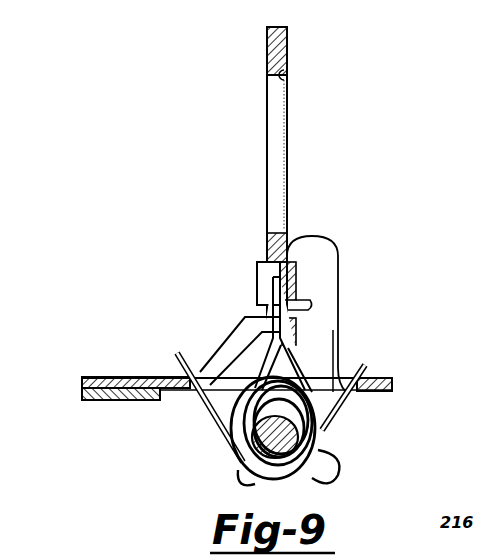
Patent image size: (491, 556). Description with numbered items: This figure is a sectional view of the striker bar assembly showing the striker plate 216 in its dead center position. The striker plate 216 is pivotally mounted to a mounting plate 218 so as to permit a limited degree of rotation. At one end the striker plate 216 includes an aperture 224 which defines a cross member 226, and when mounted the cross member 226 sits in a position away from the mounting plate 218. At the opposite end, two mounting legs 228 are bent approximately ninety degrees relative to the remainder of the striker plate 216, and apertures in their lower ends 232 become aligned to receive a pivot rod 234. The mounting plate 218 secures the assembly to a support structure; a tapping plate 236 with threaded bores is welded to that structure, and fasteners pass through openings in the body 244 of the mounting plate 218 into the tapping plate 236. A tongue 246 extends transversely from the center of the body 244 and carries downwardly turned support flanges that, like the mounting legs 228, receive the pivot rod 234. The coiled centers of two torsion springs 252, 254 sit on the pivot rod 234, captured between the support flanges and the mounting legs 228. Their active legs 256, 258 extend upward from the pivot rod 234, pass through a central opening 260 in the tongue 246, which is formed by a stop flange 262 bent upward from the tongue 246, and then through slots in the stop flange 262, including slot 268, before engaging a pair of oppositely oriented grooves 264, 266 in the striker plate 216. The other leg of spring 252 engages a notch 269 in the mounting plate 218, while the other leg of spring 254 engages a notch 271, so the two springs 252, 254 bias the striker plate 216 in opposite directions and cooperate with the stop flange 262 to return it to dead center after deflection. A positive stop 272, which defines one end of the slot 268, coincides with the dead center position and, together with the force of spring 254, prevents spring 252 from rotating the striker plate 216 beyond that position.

The striker plate 216 is at (283, 146).
The mounting plate 218 is at (80, 381).
The aperture 224 is at (286, 80).
The cross member 226 is at (283, 55).
The mounting legs 228 is at (318, 255).
The lower ends 232 is at (328, 462).
The pivot rod 234 is at (258, 470).
The tapping plate 236 is at (100, 398).
The body 244 is at (110, 377).
The tongue 246 is at (392, 385).
The torsion spring 252 is at (228, 434).
The torsion spring 254 is at (338, 415).
The active leg 256 is at (296, 255).
The active leg 258 is at (257, 290).
The central opening 260 is at (337, 372).
The stop flange 262 is at (265, 332).
The groove 264 is at (296, 290).
The groove 266 is at (262, 265).
The slot 268 is at (240, 345).
The notch 269 is at (198, 396).
The notch 271 is at (345, 392).
The positive stop 272 is at (310, 326).